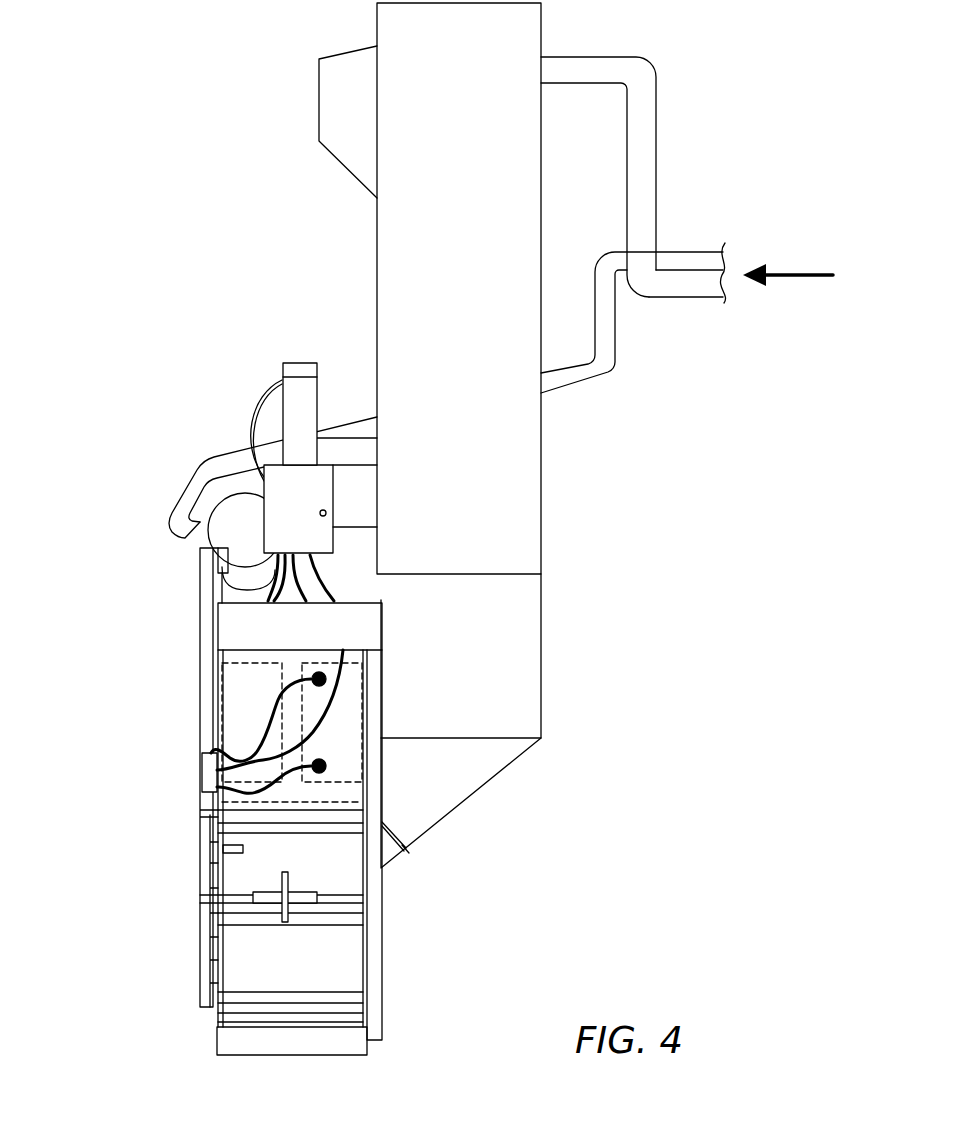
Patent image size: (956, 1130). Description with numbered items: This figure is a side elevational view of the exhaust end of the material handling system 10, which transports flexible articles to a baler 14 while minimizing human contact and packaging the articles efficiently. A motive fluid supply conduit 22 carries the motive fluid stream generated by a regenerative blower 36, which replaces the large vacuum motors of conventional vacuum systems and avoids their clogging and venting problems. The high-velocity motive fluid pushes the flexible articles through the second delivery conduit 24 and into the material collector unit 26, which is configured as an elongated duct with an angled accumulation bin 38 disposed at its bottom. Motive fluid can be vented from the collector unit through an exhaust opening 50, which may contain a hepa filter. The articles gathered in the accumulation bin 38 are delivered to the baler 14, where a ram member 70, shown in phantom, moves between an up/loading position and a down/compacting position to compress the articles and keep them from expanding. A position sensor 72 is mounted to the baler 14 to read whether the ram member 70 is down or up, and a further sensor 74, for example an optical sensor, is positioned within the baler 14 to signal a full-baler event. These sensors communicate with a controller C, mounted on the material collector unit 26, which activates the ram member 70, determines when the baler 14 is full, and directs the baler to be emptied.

The material handling system 10 is at (125, 124).
The baler 14 is at (180, 772).
The motive fluid supply conduit 22 is at (603, 340).
The second delivery conduit 24 is at (690, 283).
The material collector unit 26 is at (469, 260).
The regenerative blower 36 is at (160, 498).
The accumulation bin 38 is at (437, 792).
The exhaust opening 50 is at (320, 125).
The ram member 70 is at (245, 802).
The position sensor 72 is at (320, 773).
The sensor 74 is at (321, 676).
The controller C is at (200, 787).